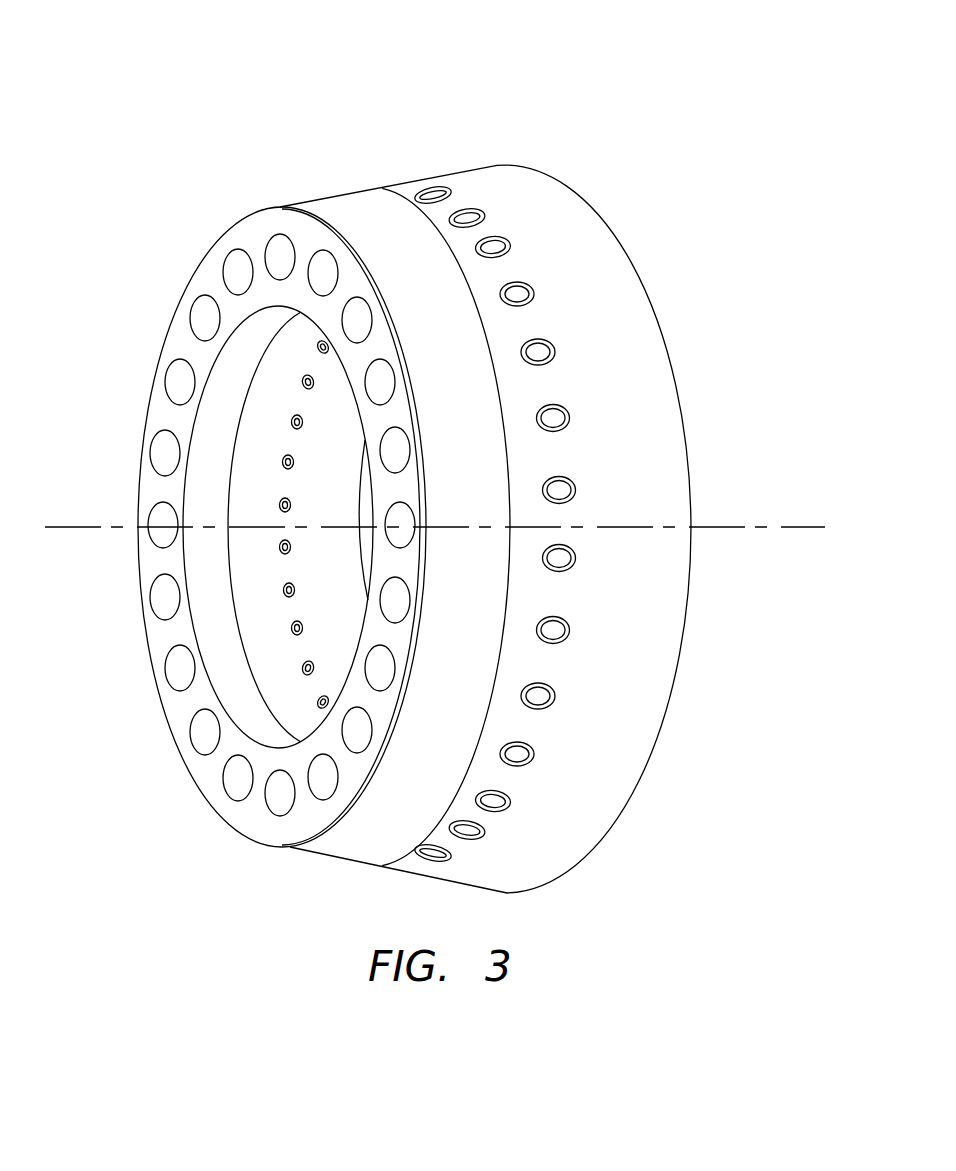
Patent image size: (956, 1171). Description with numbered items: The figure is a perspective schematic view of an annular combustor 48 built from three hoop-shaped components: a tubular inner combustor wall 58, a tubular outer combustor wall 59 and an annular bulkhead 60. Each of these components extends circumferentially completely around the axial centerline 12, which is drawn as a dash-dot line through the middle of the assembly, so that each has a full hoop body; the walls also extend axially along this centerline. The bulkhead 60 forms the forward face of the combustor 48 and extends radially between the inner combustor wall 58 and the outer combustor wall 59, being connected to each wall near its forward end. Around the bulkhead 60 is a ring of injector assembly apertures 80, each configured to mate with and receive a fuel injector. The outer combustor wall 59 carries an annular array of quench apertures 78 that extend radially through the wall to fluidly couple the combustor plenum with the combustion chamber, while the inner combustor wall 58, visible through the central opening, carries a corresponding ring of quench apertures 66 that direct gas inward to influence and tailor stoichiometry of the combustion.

The axial centerline 12 is at (800, 528).
The combustor 48 is at (582, 98).
The inner combustor wall 58 is at (222, 619).
The outer combustor wall 59 is at (461, 172).
The bulkhead 60 is at (259, 232).
The inner combustor wall quench apertures 66 is at (291, 548).
The outer combustor wall quench apertures 78 is at (511, 247).
The injector assembly apertures 80 is at (192, 325).